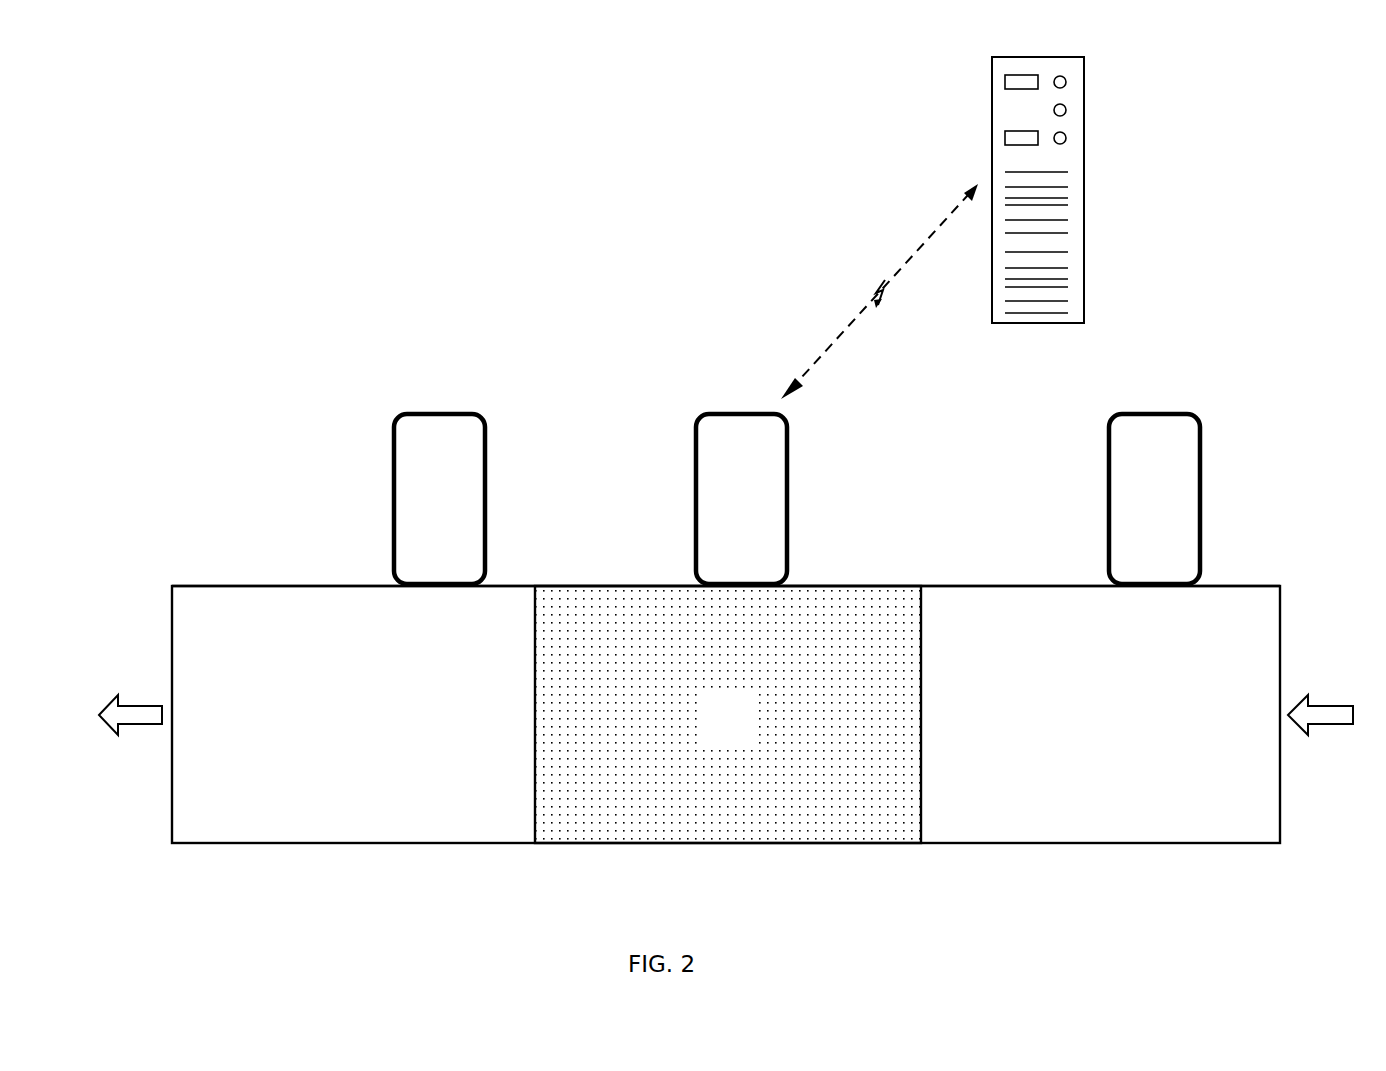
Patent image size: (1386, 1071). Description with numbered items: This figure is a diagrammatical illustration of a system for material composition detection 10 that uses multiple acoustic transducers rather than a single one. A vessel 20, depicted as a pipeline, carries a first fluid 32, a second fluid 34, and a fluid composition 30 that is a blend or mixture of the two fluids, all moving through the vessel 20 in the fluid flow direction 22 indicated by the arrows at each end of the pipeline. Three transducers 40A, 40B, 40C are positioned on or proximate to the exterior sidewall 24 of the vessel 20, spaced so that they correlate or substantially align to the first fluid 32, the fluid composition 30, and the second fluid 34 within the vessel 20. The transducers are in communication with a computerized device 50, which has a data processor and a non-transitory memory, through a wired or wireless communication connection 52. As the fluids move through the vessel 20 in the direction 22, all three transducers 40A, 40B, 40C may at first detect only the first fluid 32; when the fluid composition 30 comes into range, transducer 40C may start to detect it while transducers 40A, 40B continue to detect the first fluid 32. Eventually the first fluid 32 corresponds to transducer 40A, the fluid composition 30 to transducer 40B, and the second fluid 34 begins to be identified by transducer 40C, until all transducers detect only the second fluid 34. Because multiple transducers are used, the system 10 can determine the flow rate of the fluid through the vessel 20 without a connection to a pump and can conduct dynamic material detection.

The system for material composition detection 10 is at (194, 336).
The vessel 20 is at (231, 618).
The fluid flow direction 22 is at (130, 702).
The exterior sidewall 24 is at (371, 574).
The fluid composition 30 is at (741, 730).
The first fluid 32 is at (345, 729).
The second fluid 34 is at (1156, 729).
The transducer 40A is at (487, 432).
The transducer 40B is at (789, 432).
The transducer 40C is at (1202, 432).
The computerized device 50 is at (1084, 193).
The wireless communication connection 52 is at (906, 270).